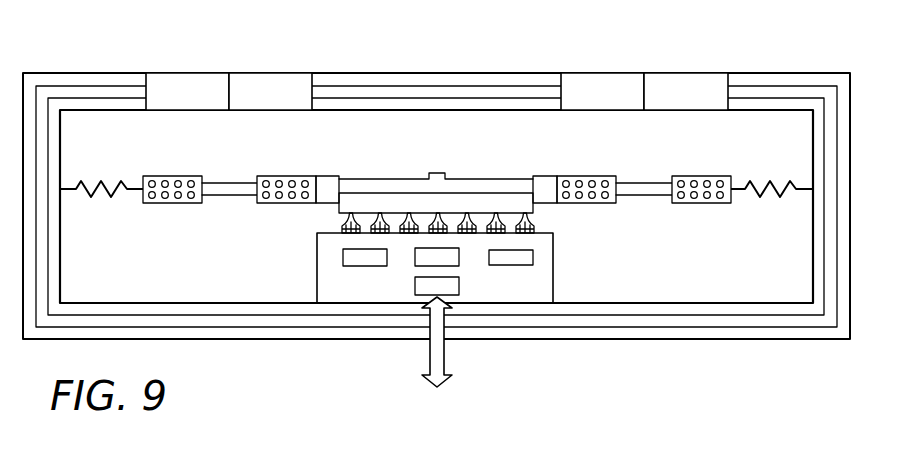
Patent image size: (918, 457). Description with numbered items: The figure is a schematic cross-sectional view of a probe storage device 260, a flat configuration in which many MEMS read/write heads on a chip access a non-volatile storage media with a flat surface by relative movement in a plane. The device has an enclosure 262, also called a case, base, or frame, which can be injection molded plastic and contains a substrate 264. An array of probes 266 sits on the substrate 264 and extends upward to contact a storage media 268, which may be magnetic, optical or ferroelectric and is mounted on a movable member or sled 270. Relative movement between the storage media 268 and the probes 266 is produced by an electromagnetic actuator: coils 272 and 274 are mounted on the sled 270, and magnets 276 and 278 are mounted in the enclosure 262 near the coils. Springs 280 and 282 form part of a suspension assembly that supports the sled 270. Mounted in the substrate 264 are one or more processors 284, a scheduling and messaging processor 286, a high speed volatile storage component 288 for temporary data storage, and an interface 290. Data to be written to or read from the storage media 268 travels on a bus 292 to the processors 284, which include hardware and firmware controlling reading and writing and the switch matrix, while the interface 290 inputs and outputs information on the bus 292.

The probe storage device 260 is at (441, 209).
The enclosure 262 is at (773, 334).
The substrate 264 is at (317, 267).
The array of probes 266 is at (340, 218).
The storage media 268 is at (410, 212).
The sled 270 is at (492, 185).
The coil 272 is at (173, 205).
The coil 274 is at (578, 204).
The magnet 276 is at (212, 80).
The magnet 278 is at (659, 87).
The spring 280 is at (108, 183).
The spring 282 is at (703, 175).
The processors 284 is at (362, 258).
The scheduling and messaging processor 286 is at (423, 257).
The high speed volatile storage component 288 is at (522, 260).
The interface 290 is at (457, 287).
The bus 292 is at (431, 367).